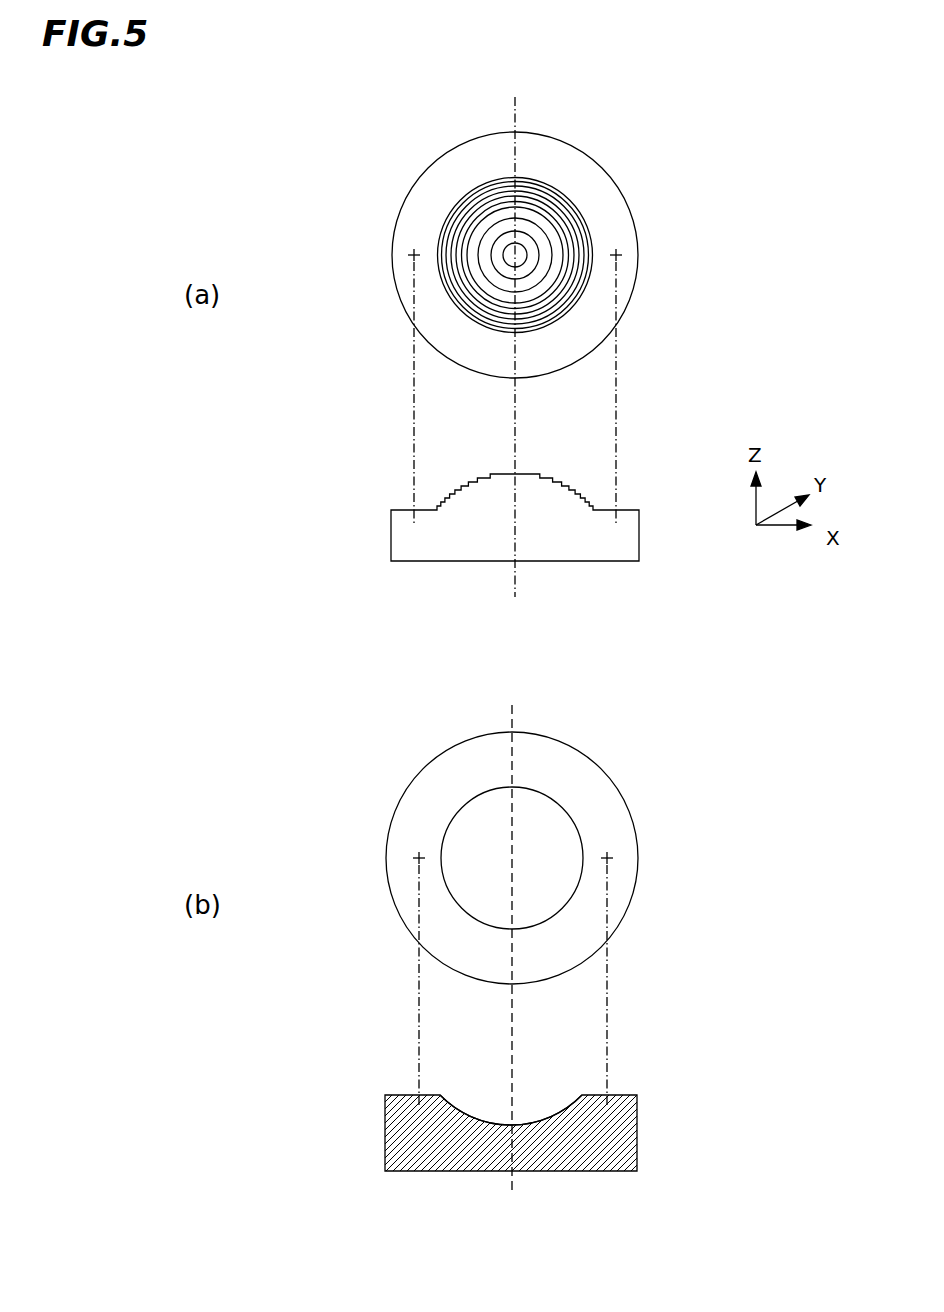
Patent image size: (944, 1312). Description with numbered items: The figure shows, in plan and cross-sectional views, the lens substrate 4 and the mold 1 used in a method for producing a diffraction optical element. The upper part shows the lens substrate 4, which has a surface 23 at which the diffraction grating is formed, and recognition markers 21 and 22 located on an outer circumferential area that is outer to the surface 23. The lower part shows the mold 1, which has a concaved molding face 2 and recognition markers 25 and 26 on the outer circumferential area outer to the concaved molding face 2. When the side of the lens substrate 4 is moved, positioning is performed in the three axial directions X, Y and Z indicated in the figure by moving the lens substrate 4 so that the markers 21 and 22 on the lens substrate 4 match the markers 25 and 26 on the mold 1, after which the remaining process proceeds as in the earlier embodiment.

The mold 1 is at (408, 1136).
The concaved molding face 2 is at (460, 1083).
The lens substrate 4 is at (404, 534).
The recognition marker 21 is at (409, 250).
The recognition marker 22 is at (621, 250).
The surface at which the diffraction grating is formed 23 is at (592, 232).
The recognition marker 25 is at (414, 853).
The recognition marker 26 is at (612, 853).